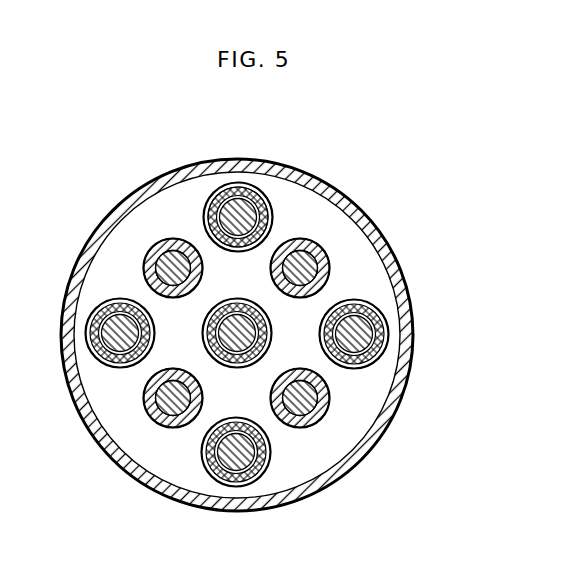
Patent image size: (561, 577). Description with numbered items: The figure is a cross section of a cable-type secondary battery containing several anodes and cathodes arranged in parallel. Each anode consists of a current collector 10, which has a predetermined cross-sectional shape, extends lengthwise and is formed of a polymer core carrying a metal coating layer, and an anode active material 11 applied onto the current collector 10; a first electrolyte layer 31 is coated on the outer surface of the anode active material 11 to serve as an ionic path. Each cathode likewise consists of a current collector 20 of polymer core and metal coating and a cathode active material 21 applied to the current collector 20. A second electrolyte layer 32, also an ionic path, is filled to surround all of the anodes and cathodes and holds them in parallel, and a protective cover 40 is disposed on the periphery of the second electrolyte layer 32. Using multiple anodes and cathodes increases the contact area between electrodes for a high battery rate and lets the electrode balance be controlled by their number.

The current collector of inner electrode 10 is at (250, 190).
The active material of inner electrode 11 is at (238, 187).
The first electrolyte layer 31 is at (250, 193).
The current collector of outer electrode 20 is at (132, 235).
The active material of outer electrode 21 is at (153, 235).
The second electrolyte layer 32 is at (363, 247).
The protective cover 40 is at (399, 283).